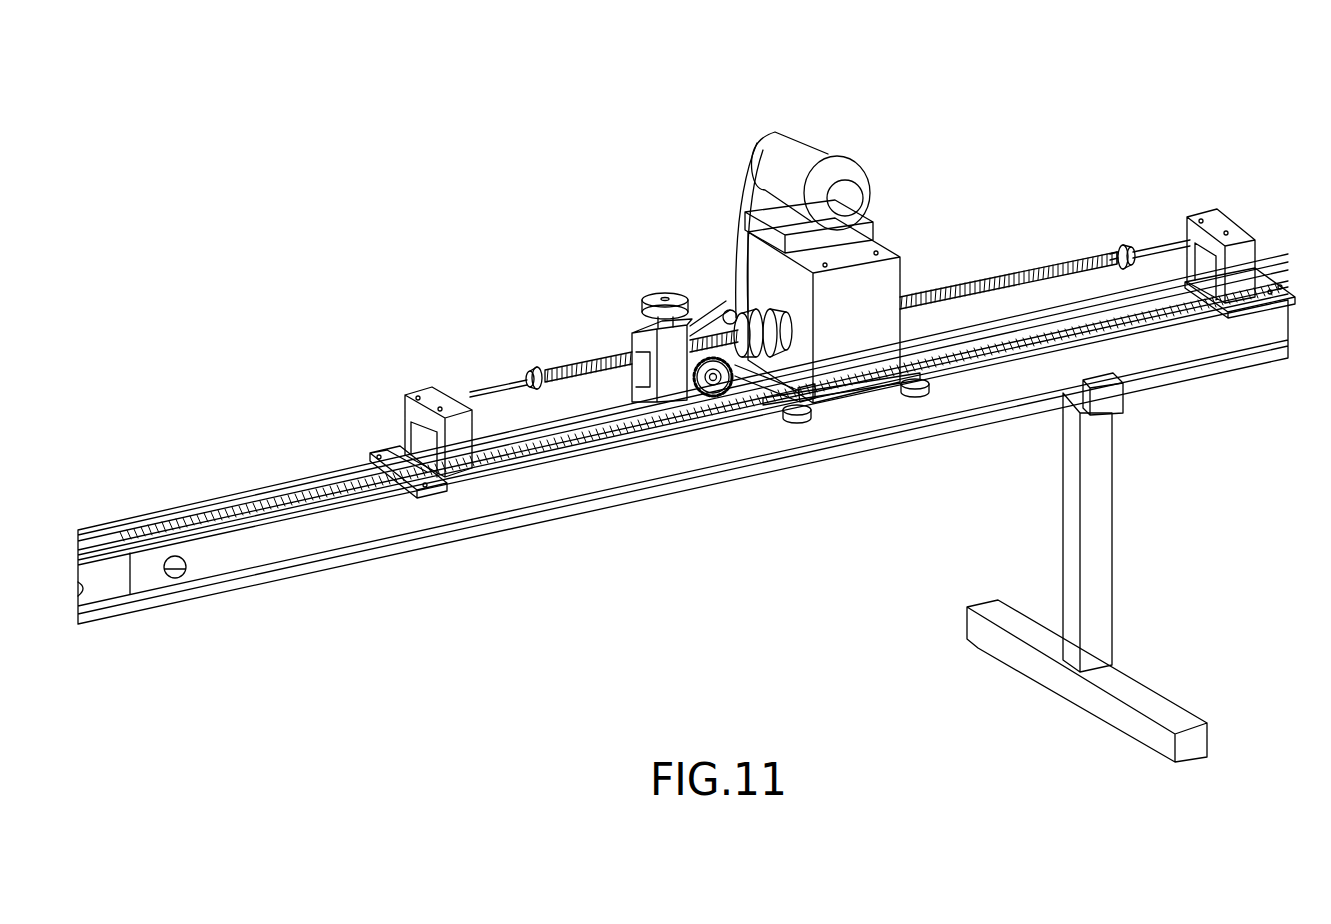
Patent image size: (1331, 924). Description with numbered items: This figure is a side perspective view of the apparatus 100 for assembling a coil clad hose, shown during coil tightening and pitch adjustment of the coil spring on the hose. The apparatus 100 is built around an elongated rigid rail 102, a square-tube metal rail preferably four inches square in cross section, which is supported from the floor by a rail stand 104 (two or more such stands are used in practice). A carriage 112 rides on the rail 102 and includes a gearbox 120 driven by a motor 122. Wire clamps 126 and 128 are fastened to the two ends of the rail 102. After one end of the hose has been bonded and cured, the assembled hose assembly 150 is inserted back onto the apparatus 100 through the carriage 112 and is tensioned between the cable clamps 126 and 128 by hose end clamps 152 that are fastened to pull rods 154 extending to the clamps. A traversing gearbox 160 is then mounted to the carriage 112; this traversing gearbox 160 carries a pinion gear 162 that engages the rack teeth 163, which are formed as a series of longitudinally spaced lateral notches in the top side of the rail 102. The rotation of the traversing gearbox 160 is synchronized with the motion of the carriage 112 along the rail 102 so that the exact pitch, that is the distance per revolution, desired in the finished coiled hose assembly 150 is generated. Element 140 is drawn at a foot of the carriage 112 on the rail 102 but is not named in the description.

The apparatus 100 is at (1258, 128).
The rail 102 is at (487, 528).
The rail stand 104 is at (1112, 548).
The carriage 112 is at (822, 400).
The gearbox 120 is at (886, 247).
The motor 122 is at (830, 148).
The wire clamp 126 is at (415, 392).
The wire clamp 128 is at (1254, 258).
The carriage feet 140 is at (926, 386).
The hose assembly 150 is at (986, 280).
The hose end clamp 152 is at (1122, 245).
The pull rod 154 is at (1170, 240).
The traversing gearbox 160 is at (636, 352).
The pinion gear 162 is at (713, 400).
The rack teeth 163 is at (598, 440).